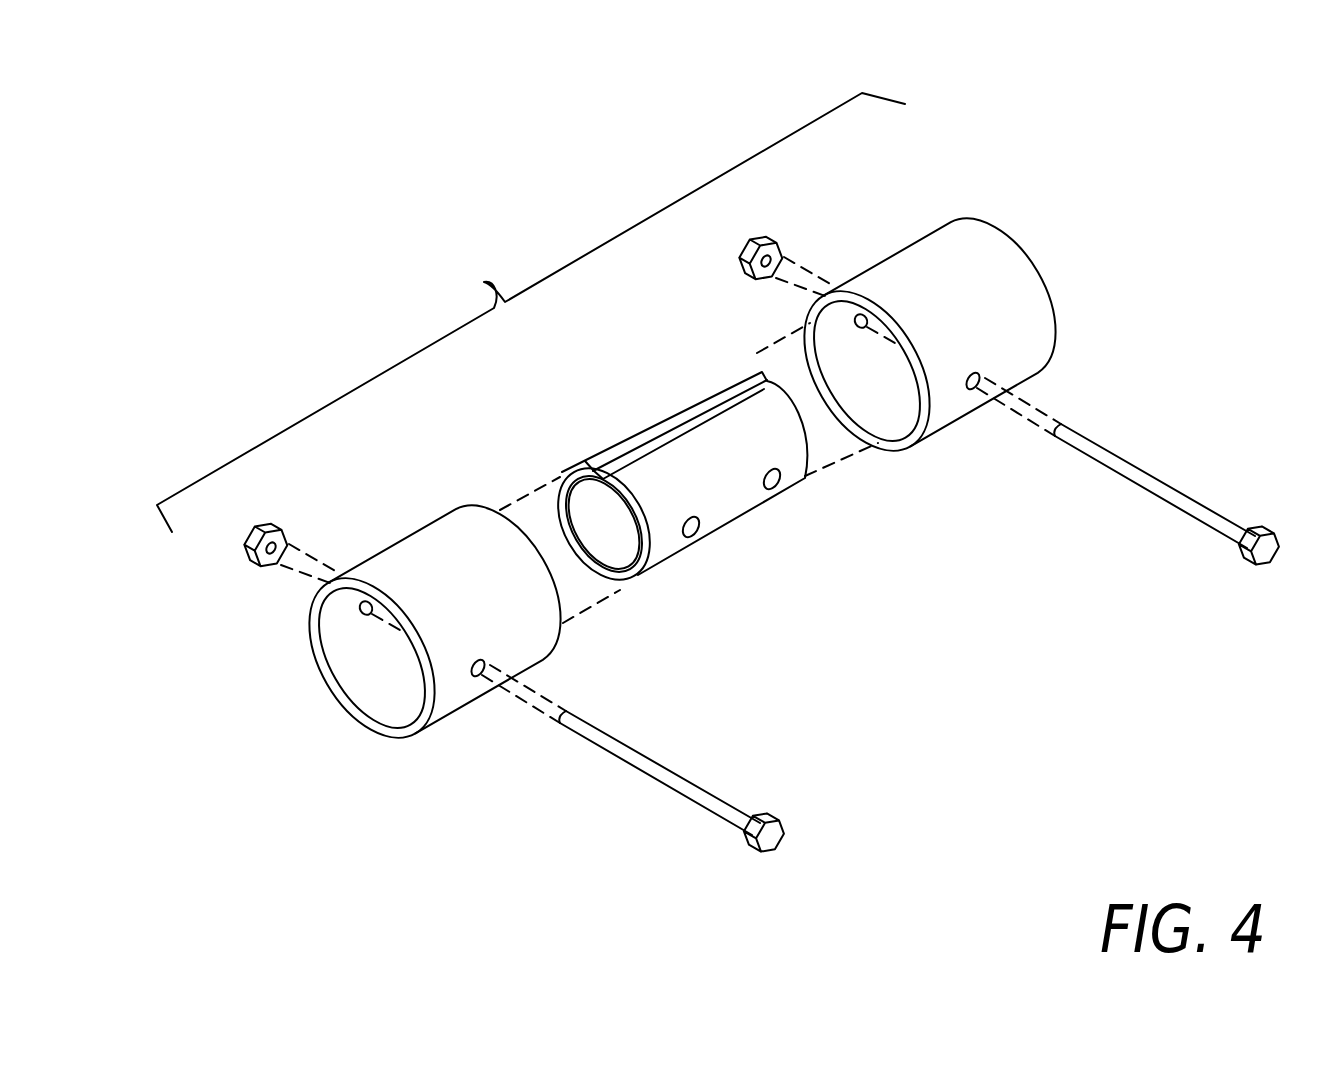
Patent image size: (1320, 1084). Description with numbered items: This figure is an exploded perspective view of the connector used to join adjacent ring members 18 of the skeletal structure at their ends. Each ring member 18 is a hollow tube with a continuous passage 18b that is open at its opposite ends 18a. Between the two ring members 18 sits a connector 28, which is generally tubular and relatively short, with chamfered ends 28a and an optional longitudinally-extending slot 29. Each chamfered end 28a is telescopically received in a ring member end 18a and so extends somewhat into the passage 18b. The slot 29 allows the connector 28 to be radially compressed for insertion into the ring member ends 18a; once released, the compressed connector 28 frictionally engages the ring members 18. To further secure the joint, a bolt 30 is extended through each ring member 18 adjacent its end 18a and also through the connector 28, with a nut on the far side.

The ring member 18 is at (431, 523).
The ring member end 18a is at (519, 523).
The passage 18b is at (392, 676).
The connector 28 is at (722, 491).
The chamfered end 28a is at (618, 588).
The longitudinally-extending slot 29 is at (710, 414).
The bolt 30 is at (711, 787).